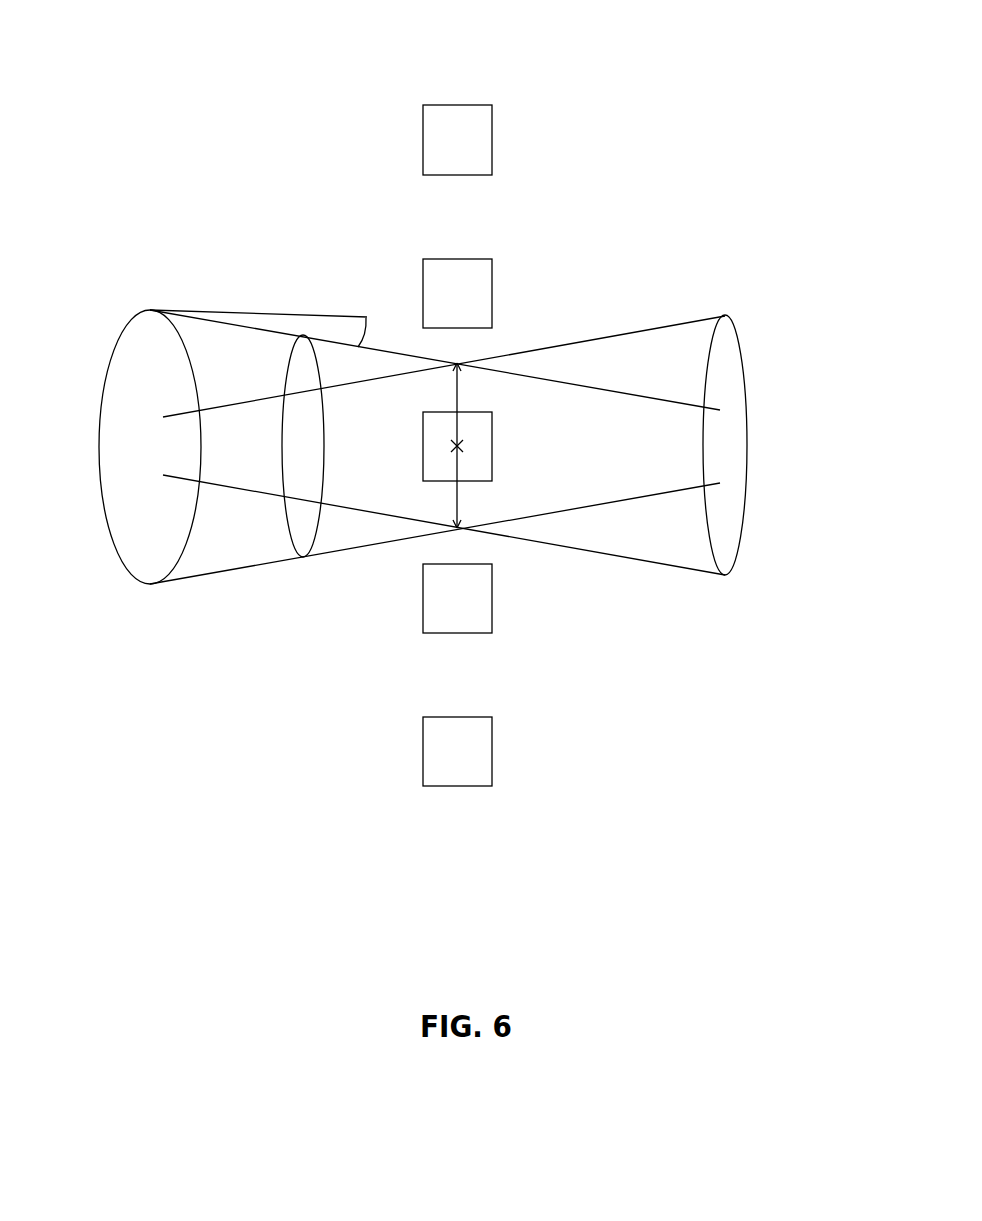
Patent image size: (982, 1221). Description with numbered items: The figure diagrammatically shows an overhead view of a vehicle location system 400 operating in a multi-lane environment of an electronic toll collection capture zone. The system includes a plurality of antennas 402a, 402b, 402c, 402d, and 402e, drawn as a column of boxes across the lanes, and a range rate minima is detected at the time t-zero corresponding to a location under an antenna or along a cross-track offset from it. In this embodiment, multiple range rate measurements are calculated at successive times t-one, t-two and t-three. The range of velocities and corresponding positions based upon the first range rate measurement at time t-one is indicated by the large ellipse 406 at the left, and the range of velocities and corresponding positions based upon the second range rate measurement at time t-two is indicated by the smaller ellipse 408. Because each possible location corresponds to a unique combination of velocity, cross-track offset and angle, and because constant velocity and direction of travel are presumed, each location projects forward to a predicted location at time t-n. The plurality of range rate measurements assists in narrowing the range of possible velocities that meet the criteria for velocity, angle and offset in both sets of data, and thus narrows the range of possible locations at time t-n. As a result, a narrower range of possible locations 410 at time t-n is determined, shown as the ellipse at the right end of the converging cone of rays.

The vehicle location system 400 is at (181, 64).
The antenna 402a is at (492, 118).
The antenna 402b is at (492, 290).
The antenna 402c is at (422, 447).
The antenna 402d is at (492, 596).
The antenna 402e is at (492, 735).
The range of velocities and corresponding positions 406 is at (117, 550).
The range of velocities and corresponding positions 408 is at (320, 524).
The narrower range of possible locations 410 is at (747, 443).